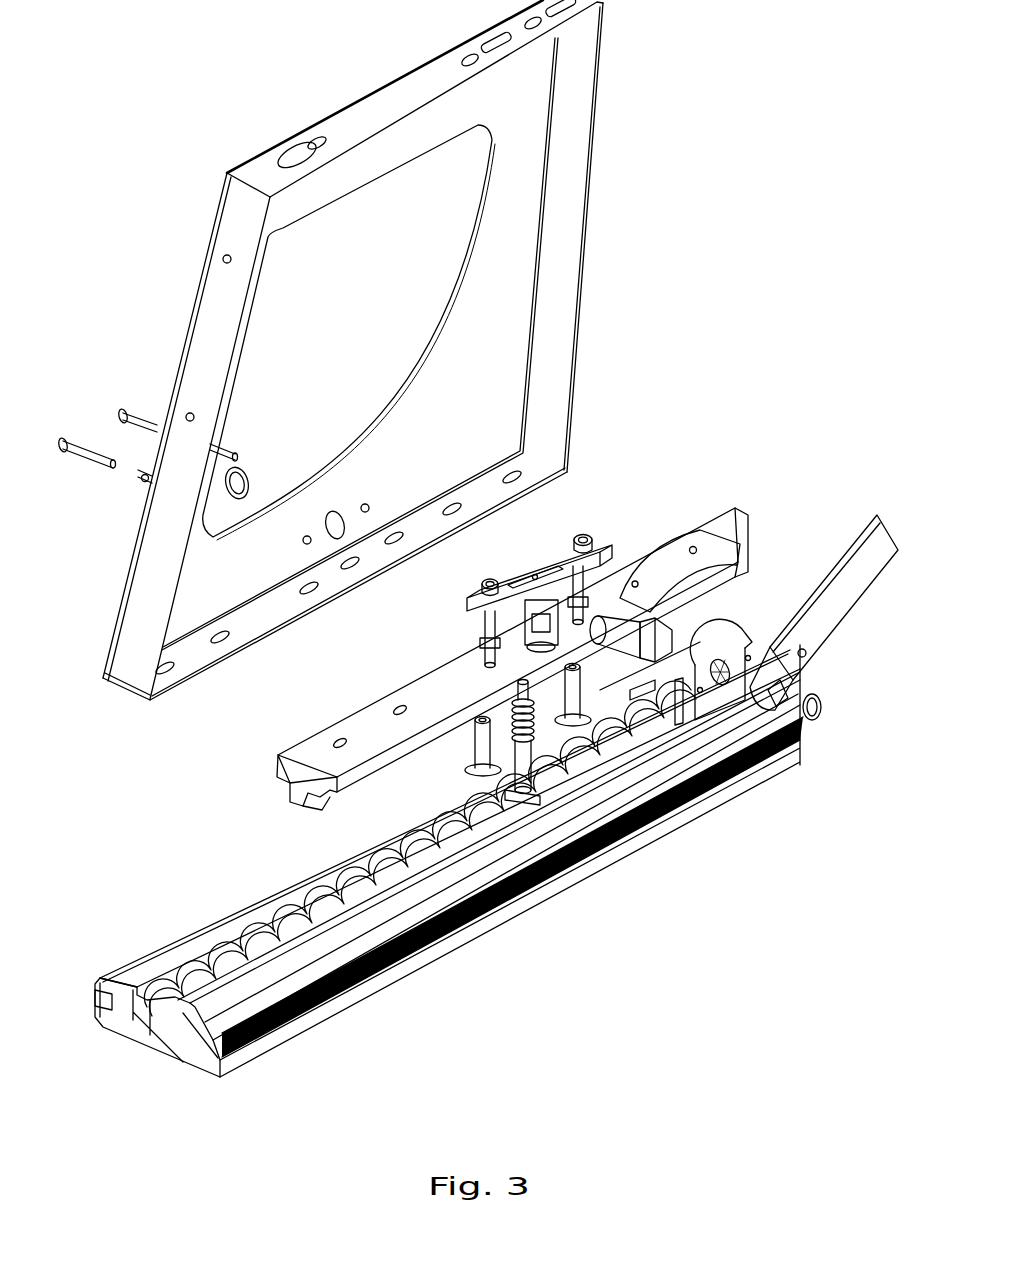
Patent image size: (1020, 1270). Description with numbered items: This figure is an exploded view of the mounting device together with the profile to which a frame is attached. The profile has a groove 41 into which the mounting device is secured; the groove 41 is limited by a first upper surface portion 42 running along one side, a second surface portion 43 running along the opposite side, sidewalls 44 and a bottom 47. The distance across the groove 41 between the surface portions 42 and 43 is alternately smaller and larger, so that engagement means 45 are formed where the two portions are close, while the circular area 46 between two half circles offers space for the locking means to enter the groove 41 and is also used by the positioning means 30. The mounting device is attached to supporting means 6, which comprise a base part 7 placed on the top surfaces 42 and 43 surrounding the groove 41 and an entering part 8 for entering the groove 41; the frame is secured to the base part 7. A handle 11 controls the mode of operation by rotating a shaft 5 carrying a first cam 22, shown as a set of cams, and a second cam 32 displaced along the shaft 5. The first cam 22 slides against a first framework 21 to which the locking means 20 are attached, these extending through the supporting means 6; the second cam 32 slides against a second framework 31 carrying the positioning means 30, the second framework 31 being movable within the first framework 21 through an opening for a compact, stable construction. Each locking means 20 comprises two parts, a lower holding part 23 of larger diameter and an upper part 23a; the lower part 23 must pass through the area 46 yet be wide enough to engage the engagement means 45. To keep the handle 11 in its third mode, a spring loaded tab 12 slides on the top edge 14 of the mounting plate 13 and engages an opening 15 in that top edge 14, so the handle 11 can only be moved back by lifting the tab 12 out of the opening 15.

The shaft 5 is at (648, 730).
The supporting means 6 is at (258, 752).
The base part 7 is at (333, 725).
The entering part 8 is at (296, 800).
The handle 11 is at (830, 565).
The spring loaded tab 12 is at (808, 655).
The mounting plate 13 is at (716, 695).
The top edge 14 is at (718, 642).
The opening 15 is at (758, 626).
The locking means 20 is at (460, 756).
The first framework 21 is at (605, 528).
The first cam 22 is at (660, 608).
The lower holding part 23 is at (574, 705).
The upper part 23a is at (639, 690).
The positioning means 30 is at (508, 778).
The second framework 31 is at (505, 623).
The second cam 32 is at (738, 556).
The groove 41 is at (150, 1018).
The first upper surface portion 42 is at (247, 920).
The second surface portion 43 is at (262, 1030).
The sidewalls 44 is at (118, 1012).
The engagement means 45 is at (312, 925).
The area between two half circles 46 is at (357, 872).
The bottom 47 is at (385, 912).